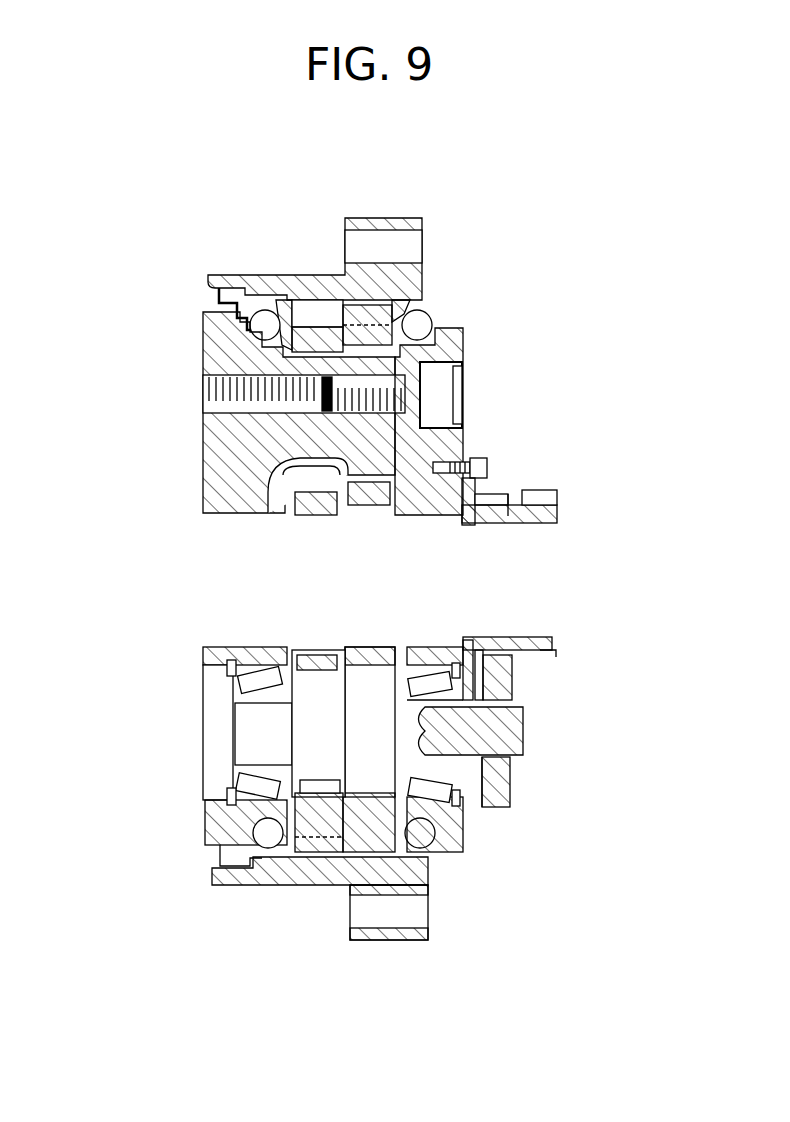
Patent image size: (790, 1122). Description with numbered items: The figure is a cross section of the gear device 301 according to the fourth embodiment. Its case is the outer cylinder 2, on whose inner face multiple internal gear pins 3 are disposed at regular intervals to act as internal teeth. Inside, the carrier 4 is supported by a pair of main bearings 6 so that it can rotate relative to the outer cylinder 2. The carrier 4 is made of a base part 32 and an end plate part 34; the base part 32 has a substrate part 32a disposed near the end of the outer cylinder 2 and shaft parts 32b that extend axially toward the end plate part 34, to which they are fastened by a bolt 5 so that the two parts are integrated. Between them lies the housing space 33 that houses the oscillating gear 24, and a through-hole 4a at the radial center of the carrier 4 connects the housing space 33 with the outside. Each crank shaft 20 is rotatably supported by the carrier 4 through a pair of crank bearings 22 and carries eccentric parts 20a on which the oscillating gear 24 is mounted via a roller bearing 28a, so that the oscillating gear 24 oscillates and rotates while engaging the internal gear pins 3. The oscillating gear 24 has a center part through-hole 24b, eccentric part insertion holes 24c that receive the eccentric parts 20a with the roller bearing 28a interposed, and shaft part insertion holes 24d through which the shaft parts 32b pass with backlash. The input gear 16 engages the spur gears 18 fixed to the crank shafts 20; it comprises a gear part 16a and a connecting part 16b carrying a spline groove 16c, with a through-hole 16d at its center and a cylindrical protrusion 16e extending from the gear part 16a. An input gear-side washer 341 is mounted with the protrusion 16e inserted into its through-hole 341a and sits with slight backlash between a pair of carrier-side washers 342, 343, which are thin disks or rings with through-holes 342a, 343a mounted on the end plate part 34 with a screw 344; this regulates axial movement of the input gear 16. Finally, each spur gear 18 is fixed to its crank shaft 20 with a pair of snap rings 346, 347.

The outer cylinder 2 is at (292, 275).
The internal gear pin 3 is at (335, 300).
The carrier 4 is at (249, 771).
The through-hole 4a is at (230, 650).
The bolt 5 is at (468, 386).
The main bearing 6 is at (262, 311).
The input gear 16 is at (542, 533).
The gear part 16a is at (505, 494).
The connecting part 16b is at (557, 514).
The spline groove 16c is at (548, 650).
The through-hole 16d is at (490, 524).
The cylindrical protrusion 16e is at (470, 524).
The spur gear 18 is at (520, 790).
The crank shaft 20 is at (395, 830).
The eccentric part 20a is at (290, 830).
The crank bearing 22 is at (232, 812).
The oscillating gear 24 is at (235, 833).
The center part through-hole 24b is at (240, 670).
The eccentric part insertion hole 24c is at (290, 665).
The shaft part insertion hole 24d is at (270, 495).
The roller bearing 28a is at (275, 850).
The base part 32 is at (256, 413).
The substrate part 32a is at (215, 462).
The shaft part 32b is at (445, 488).
The housing space 33 is at (316, 644).
The end plate part 34 is at (445, 438).
The gear device 301 is at (360, 423).
The input gear-side washer 341 is at (553, 669).
The through-hole 341a is at (480, 524).
The carrier-side washer 342 is at (554, 486).
The through-hole 342a is at (500, 522).
The carrier-side washer 343 is at (412, 550).
The through-hole 343a is at (406, 565).
The screw 344 is at (468, 458).
The snap ring 346 is at (535, 690).
The snap ring 347 is at (498, 783).